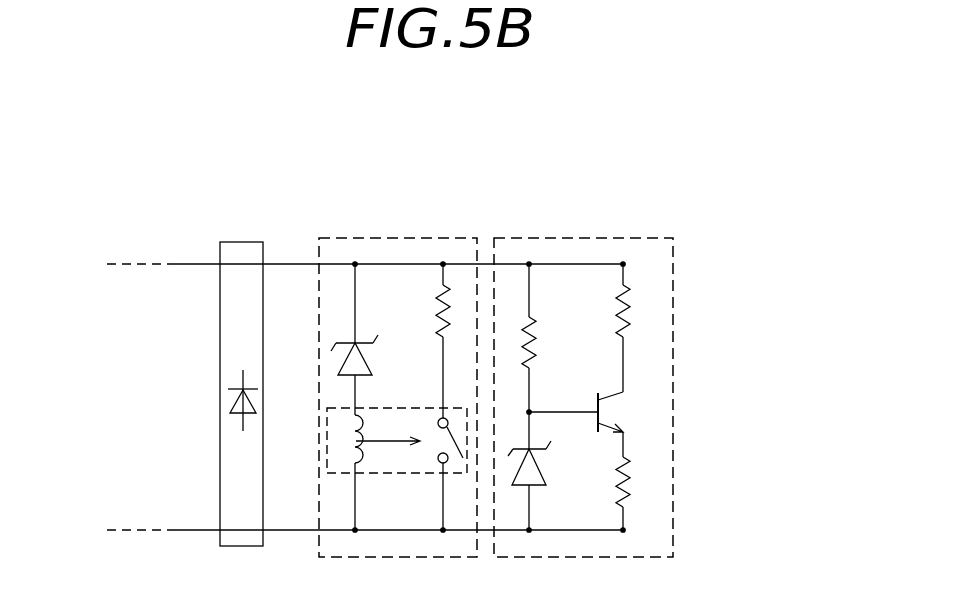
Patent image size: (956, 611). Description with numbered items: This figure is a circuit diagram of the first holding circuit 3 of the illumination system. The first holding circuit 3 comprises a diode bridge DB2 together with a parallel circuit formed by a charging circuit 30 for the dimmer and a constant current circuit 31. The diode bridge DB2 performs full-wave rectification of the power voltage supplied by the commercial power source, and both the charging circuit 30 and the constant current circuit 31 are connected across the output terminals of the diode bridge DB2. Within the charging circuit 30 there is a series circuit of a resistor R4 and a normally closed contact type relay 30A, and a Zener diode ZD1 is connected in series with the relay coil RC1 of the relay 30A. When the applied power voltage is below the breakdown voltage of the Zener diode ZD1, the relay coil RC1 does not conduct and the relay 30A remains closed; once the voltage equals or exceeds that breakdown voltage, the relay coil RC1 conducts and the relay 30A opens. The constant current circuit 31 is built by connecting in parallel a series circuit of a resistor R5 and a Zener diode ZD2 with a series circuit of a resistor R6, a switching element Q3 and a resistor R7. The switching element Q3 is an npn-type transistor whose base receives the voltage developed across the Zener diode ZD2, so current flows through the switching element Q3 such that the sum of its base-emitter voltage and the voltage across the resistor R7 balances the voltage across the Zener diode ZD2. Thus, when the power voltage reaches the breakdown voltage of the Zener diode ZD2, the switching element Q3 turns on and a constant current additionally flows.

The diode bridge DB2 is at (241, 378).
The charging circuit 30 is at (402, 235).
The constant current circuit 31 is at (612, 235).
The relay 30A is at (369, 469).
The relay coil RC1 is at (362, 430).
The Zener diode ZD1 is at (379, 336).
The Zener diode ZD2 is at (553, 485).
The resistor R4 is at (424, 341).
The resistor R5 is at (551, 356).
The resistor R6 is at (600, 328).
The resistor R7 is at (640, 493).
The switching element Q3 is at (591, 424).
The first holding circuit 3 is at (707, 559).